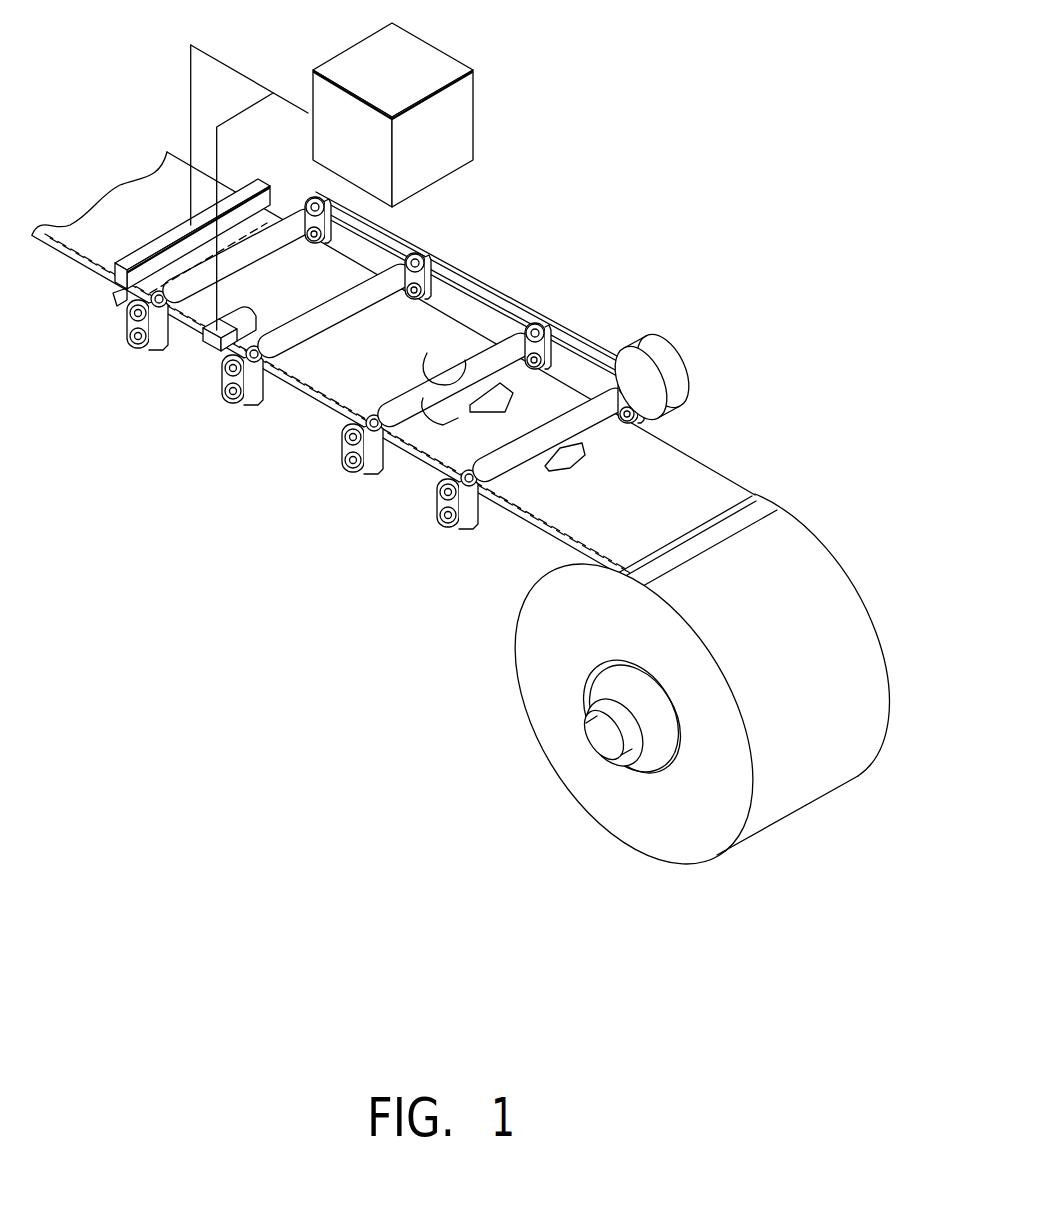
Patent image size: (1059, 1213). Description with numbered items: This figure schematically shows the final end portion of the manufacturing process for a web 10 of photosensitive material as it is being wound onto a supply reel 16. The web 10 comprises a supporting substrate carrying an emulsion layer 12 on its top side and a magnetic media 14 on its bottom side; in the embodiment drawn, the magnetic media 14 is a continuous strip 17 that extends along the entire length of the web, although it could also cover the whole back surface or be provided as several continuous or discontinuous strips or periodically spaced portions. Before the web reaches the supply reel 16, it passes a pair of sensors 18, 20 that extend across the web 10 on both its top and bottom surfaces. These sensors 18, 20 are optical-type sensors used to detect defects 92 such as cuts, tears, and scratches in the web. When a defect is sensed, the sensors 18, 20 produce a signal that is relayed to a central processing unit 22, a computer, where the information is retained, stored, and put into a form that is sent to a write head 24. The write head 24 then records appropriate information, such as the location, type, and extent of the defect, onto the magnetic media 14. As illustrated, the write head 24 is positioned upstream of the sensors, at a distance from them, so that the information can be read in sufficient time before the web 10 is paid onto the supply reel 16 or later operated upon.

The web 10 is at (683, 453).
The emulsion layer 12 is at (724, 486).
The magnetic media 14 is at (425, 468).
The supply reel 16 is at (598, 733).
The continuous strip 17 is at (530, 527).
The sensor 18 is at (170, 242).
The sensor 20 is at (112, 300).
The central processing unit 22 is at (447, 64).
The write head 24 is at (207, 348).
The defects 92 is at (440, 350).